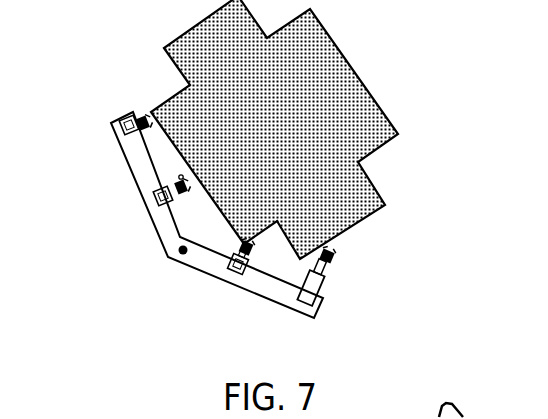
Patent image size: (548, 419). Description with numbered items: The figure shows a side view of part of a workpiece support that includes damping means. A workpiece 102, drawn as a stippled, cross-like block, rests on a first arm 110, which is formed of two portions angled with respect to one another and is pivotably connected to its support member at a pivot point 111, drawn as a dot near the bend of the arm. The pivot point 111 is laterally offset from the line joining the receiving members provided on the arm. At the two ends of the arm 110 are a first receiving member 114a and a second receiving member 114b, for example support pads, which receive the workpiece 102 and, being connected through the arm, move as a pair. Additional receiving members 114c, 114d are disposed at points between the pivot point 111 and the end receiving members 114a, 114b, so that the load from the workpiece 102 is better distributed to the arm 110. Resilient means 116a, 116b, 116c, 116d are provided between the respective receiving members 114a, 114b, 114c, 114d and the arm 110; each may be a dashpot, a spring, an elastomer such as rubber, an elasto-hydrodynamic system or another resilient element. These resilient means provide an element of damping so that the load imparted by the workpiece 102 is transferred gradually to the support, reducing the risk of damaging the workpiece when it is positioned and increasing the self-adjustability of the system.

The workpiece 102 is at (352, 72).
The first arm 110 is at (205, 262).
The pivot point 111 is at (170, 253).
The first receiving member 114a is at (140, 120).
The second receiving member 114b is at (333, 253).
The additional receiving member 114c is at (252, 248).
The additional receiving member 114d is at (178, 184).
The resilient means 116a is at (116, 120).
The resilient means 116b is at (324, 278).
The resilient means 116c is at (236, 270).
The resilient means 116d is at (156, 201).